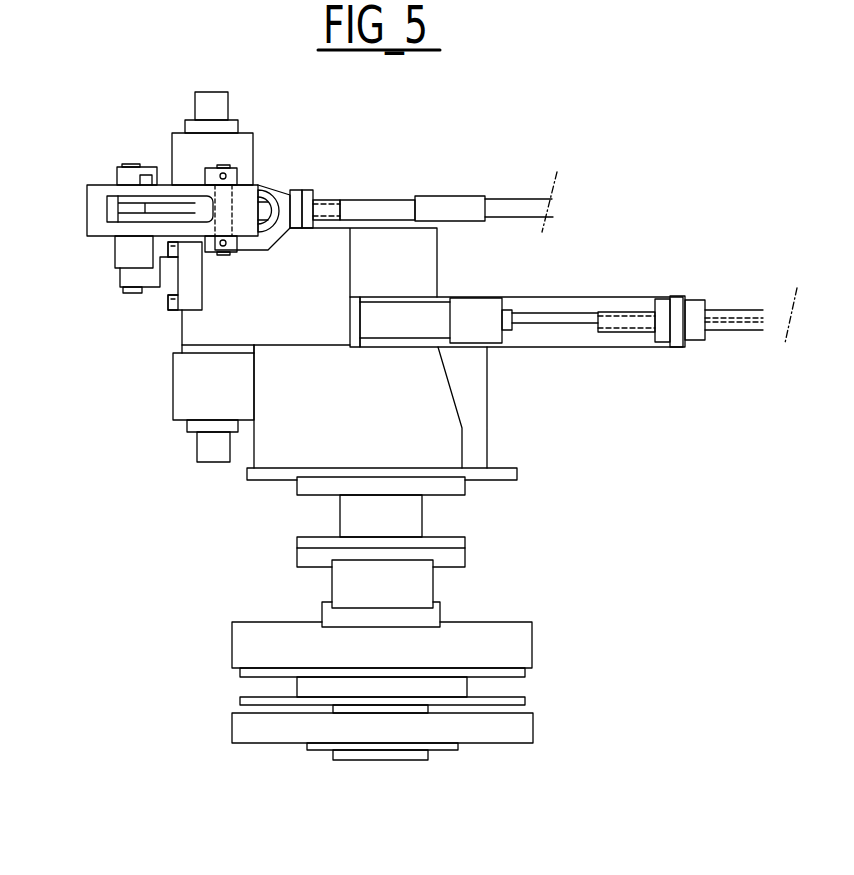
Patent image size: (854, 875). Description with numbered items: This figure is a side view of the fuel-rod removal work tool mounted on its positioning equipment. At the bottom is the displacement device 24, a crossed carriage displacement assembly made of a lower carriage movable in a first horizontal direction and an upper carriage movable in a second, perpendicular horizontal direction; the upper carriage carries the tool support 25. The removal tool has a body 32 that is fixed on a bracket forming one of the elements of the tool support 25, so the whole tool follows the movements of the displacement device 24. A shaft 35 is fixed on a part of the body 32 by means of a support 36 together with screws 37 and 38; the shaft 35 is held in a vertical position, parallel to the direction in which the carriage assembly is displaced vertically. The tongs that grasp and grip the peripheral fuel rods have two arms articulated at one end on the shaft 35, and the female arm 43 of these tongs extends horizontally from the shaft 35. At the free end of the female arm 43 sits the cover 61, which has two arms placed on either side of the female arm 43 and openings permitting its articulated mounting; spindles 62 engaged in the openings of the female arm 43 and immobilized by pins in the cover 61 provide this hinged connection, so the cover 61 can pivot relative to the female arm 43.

The displacement device 24 is at (480, 602).
The tool support 25 is at (450, 445).
The body 32 is at (305, 325).
The shaft 35 is at (120, 255).
The support 36 is at (170, 276).
The screws 37 is at (174, 301).
The screw 38 is at (125, 289).
The female arm 43 is at (97, 225).
The cover 61 is at (277, 231).
The spindles 62 is at (230, 192).